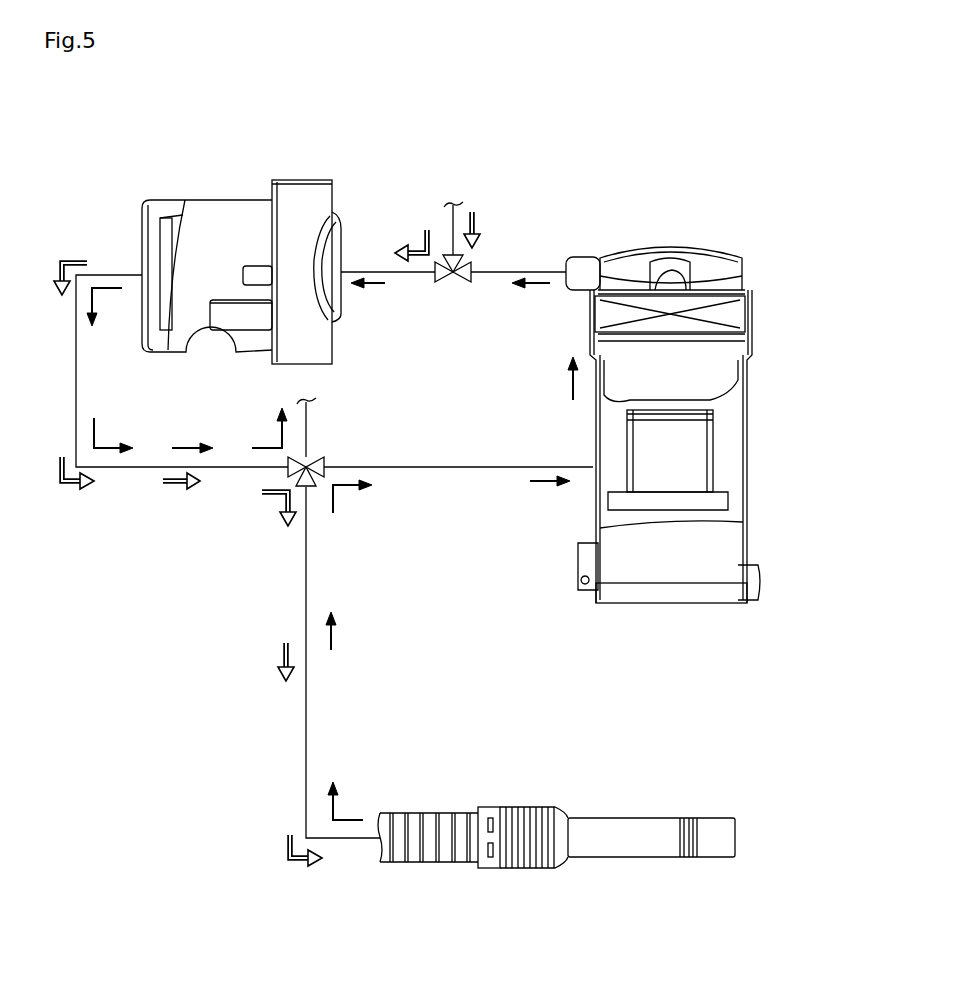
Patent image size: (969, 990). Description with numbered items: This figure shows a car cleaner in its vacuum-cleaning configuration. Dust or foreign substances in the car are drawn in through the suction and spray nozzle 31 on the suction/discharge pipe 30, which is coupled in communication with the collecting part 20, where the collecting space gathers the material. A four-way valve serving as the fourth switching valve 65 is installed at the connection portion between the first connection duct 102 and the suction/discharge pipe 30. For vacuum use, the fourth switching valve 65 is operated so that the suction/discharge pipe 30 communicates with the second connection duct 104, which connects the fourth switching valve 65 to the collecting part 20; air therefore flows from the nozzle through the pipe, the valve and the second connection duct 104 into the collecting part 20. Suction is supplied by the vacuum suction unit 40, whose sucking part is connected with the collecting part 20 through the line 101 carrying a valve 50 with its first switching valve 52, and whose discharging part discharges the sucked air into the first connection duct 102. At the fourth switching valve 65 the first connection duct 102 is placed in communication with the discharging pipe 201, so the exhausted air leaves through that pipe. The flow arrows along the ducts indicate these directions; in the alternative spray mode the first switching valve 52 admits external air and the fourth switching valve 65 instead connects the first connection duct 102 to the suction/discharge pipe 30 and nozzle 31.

The collecting part 20 is at (760, 436).
The suction/discharge pipe 30 is at (447, 812).
The suction and spray nozzle 31 is at (590, 822).
The vacuum suction unit 40 is at (260, 158).
The valve 50 is at (483, 253).
The first switching valve 52 is at (462, 285).
The fourth switching valve 65 is at (348, 455).
The first pipe 101 is at (535, 268).
The first connection duct 102 is at (140, 468).
The second connection duct 104 is at (445, 468).
The discharging pipe 201 is at (308, 416).